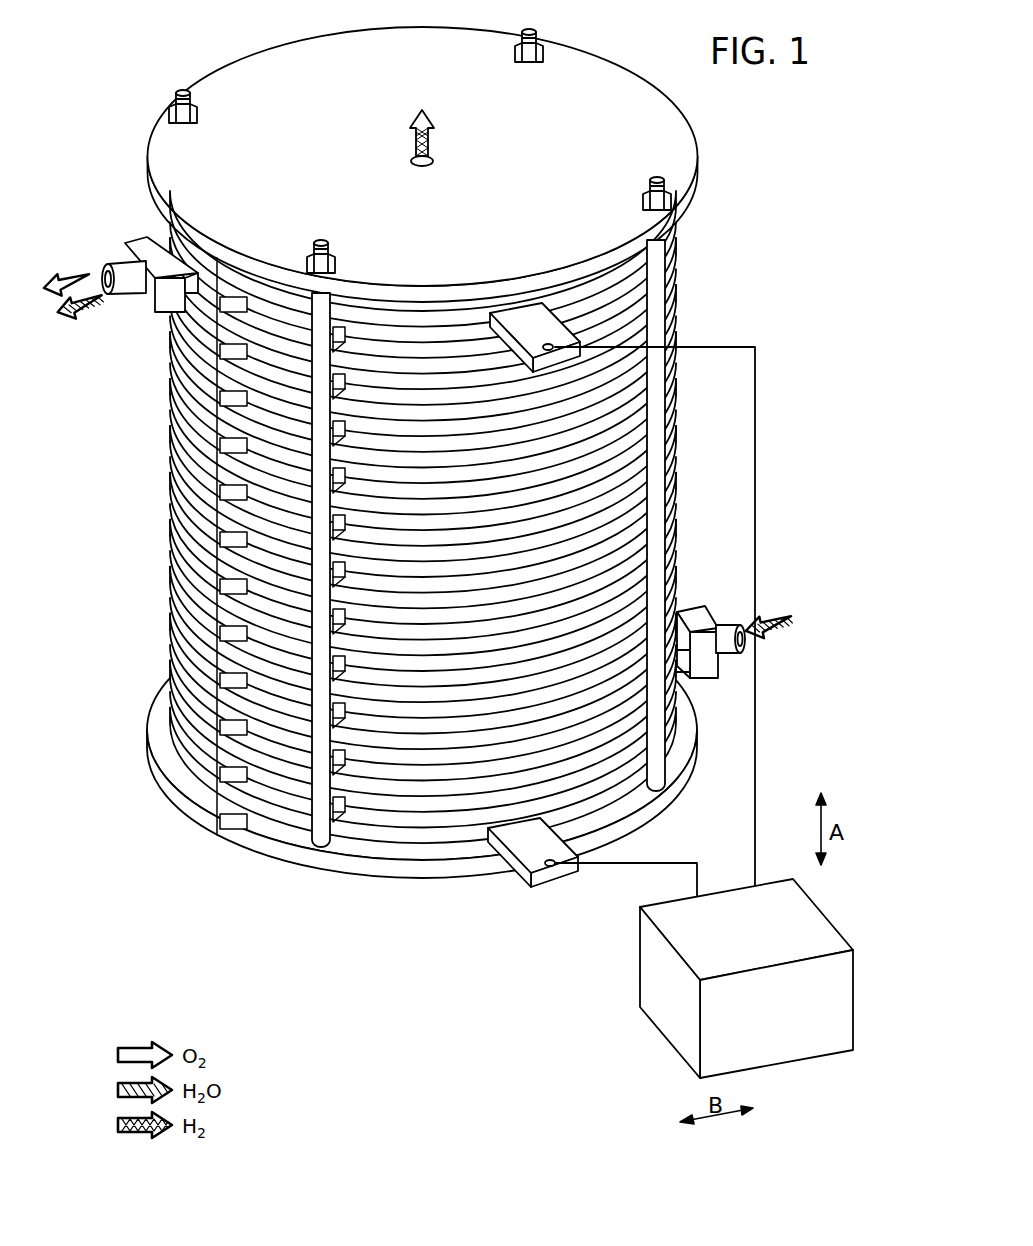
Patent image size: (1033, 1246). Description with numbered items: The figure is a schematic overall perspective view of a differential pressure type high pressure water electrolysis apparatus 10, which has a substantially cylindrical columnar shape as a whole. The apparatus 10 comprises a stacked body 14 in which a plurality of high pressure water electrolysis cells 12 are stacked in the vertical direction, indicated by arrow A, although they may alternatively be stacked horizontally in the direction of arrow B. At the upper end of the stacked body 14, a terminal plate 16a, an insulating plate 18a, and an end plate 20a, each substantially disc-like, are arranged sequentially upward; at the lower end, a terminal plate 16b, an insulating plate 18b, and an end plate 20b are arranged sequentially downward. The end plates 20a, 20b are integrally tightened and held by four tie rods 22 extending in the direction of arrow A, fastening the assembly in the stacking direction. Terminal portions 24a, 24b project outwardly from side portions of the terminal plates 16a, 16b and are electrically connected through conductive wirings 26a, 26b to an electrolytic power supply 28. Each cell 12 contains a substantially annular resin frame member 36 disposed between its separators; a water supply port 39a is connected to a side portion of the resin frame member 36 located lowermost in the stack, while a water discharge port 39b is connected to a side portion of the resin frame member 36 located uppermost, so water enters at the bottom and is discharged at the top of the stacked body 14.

The differential pressure type high pressure water electrolysis apparatus 10 is at (792, 125).
The high pressure water electrolysis cell 12 is at (183, 450).
The stacked body 14 is at (375, 588).
The terminal plate 16a is at (432, 320).
The terminal plate 16b is at (461, 833).
The insulating plate 18a is at (467, 307).
The insulating plate 18b is at (399, 852).
The end plate 20a is at (604, 75).
The end plate 20b is at (357, 878).
The tie rod 22 is at (315, 850).
The terminal portion 24a is at (520, 312).
The terminal portion 24b is at (546, 882).
The conductive wiring 26a is at (721, 346).
The conductive wiring 26b is at (608, 866).
The electrolytic power supply 28 is at (668, 1025).
The resin frame member 36 is at (207, 297).
The water supply port 39a is at (725, 626).
The water discharge port 39b is at (117, 262).